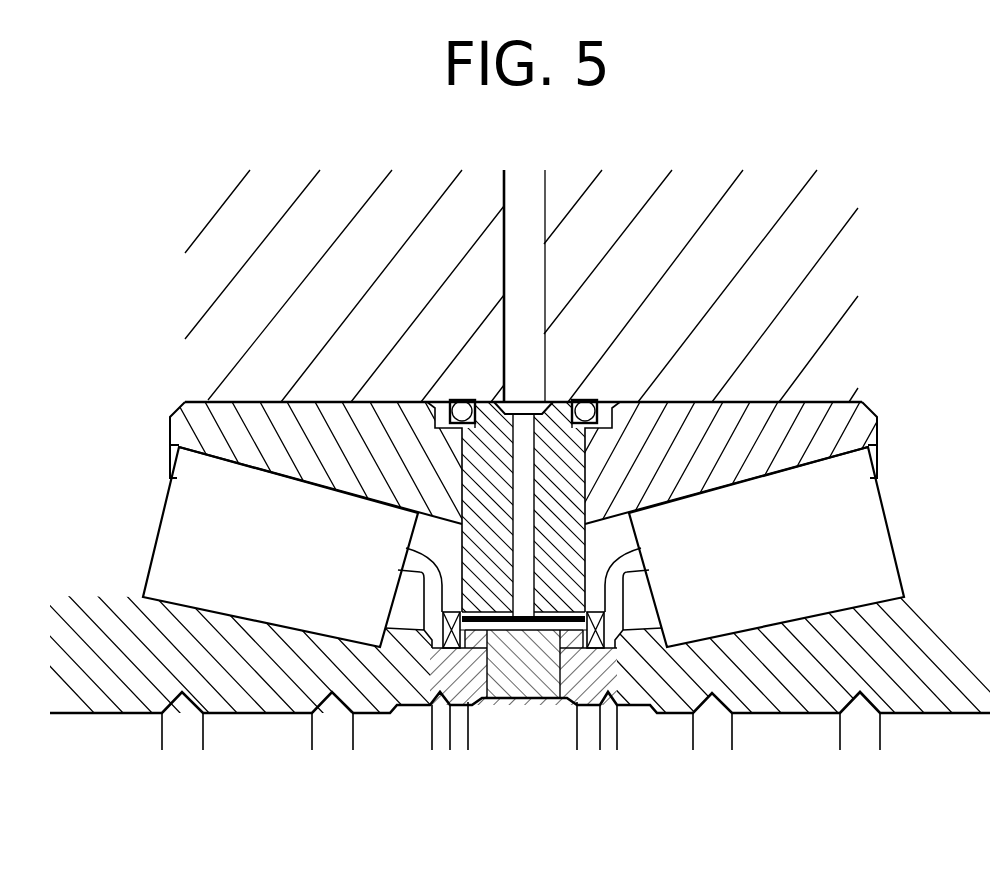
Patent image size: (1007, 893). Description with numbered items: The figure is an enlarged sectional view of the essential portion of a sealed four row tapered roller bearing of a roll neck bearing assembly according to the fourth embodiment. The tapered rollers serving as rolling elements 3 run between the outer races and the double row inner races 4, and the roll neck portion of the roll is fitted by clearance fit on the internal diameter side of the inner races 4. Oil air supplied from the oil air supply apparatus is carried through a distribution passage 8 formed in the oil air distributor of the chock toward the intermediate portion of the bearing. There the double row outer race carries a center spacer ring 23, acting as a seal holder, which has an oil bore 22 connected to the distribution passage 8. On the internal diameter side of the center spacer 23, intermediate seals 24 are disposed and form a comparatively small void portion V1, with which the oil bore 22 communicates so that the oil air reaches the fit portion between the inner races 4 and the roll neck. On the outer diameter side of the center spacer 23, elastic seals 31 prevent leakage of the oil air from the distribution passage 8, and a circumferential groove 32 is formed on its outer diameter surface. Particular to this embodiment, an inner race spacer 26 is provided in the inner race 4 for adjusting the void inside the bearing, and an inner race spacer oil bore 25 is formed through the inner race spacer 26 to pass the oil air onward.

The rolling element 3 is at (853, 528).
The inner race 4 is at (787, 697).
The distribution passage 8 is at (535, 262).
The oil bore 22 is at (477, 402).
The center spacer ring 23 is at (612, 423).
The intermediate seal 24 is at (452, 650).
The inner race spacer oil bore 25 is at (524, 690).
The inner race spacer 26 is at (506, 680).
The elastic seal 31 is at (578, 403).
The circumferential groove 32 is at (506, 402).
The void portion V1 is at (497, 648).